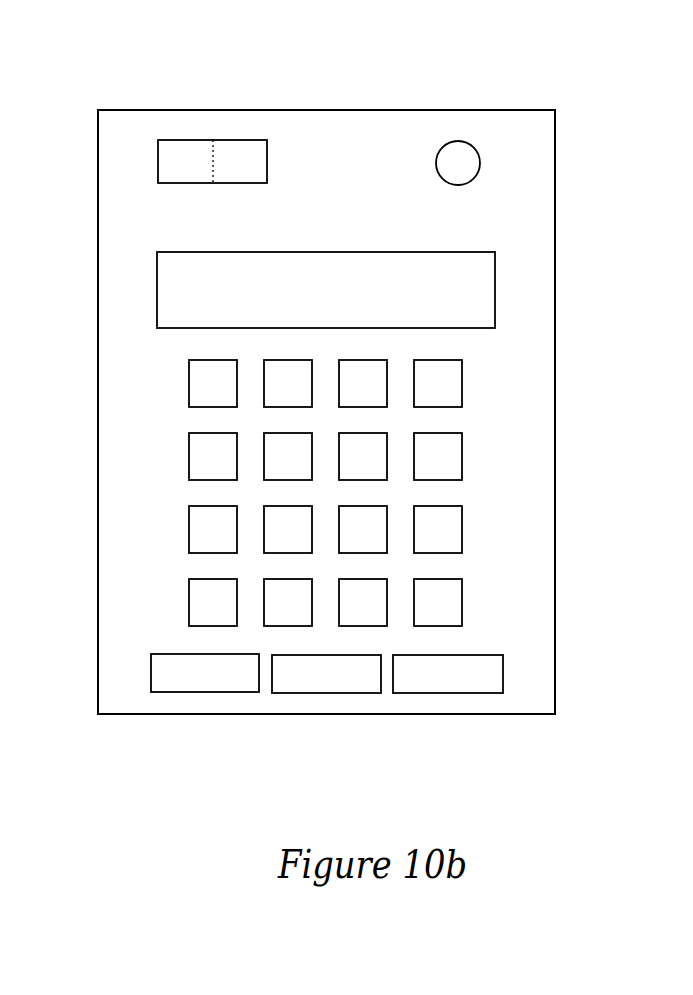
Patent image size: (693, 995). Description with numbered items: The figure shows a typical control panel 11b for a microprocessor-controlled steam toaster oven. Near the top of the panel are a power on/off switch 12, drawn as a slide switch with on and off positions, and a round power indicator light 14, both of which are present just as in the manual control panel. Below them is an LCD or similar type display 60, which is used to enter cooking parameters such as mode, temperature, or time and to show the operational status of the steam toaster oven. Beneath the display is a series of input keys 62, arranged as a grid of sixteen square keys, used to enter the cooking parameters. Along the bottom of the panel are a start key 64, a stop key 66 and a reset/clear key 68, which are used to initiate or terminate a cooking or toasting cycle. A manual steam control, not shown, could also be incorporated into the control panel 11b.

The control panel 11b is at (601, 88).
The power on/off switch 12 is at (188, 150).
The power indicator light 14 is at (455, 163).
The display 60 is at (445, 279).
The input keys 62 is at (472, 620).
The start key 64 is at (244, 678).
The stop key 66 is at (368, 682).
The reset/clear key 68 is at (490, 682).